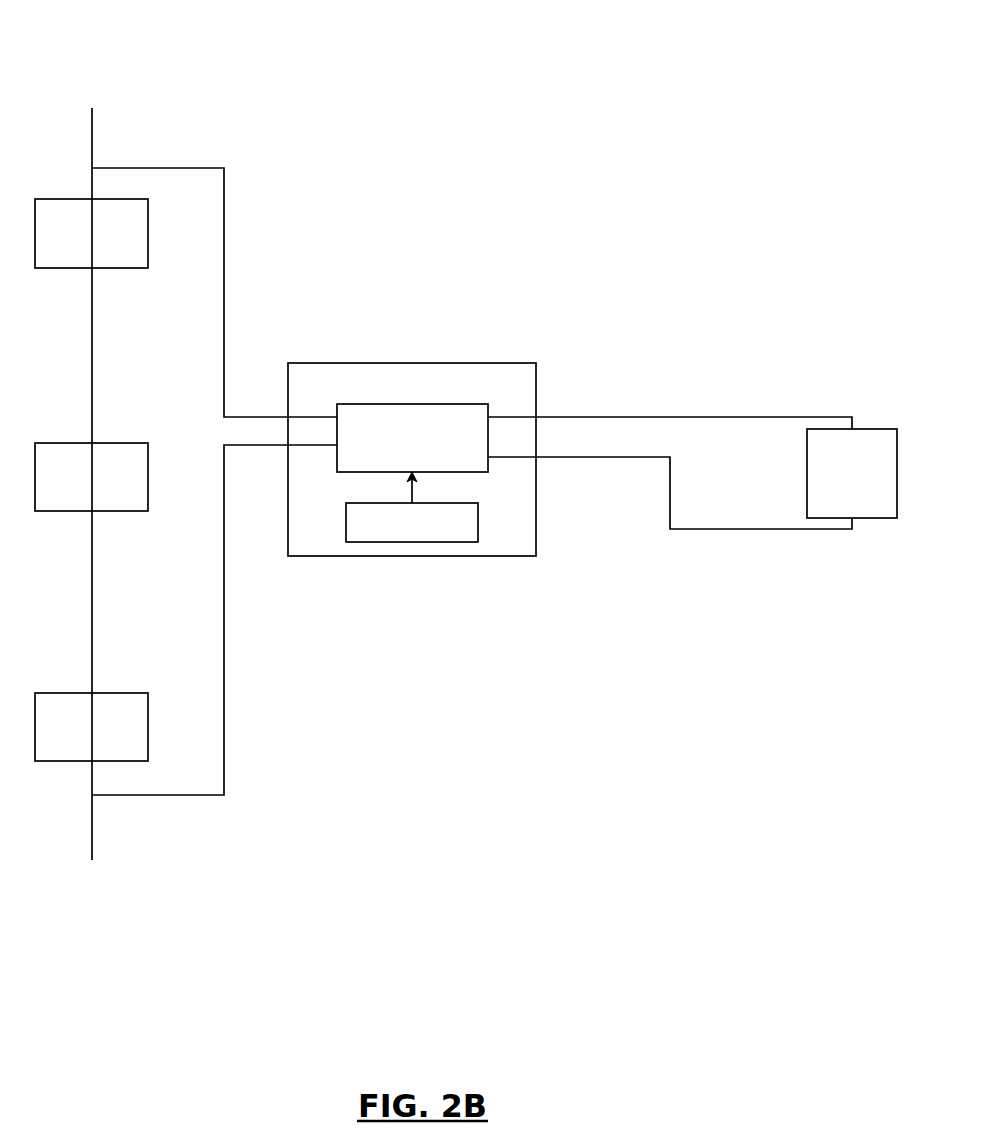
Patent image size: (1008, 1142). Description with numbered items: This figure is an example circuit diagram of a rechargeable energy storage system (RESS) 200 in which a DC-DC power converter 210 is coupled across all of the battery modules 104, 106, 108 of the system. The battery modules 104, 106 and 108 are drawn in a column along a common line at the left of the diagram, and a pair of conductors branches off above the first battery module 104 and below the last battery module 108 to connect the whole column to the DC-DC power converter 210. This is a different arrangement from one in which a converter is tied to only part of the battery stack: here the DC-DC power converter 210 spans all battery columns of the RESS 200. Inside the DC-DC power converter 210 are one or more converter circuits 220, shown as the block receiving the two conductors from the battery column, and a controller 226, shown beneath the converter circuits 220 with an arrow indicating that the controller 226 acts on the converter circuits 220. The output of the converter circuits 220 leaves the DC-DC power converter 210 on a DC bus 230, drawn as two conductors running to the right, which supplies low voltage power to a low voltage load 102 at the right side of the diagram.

The rechargeable energy storage system 200 is at (213, 33).
The low voltage load 102 is at (865, 429).
The battery module 104 is at (63, 199).
The battery module 106 is at (70, 443).
The battery module 108 is at (70, 693).
The DC-DC power converter 210 is at (343, 363).
The converter circuit 220 is at (337, 462).
The controller 226 is at (447, 542).
The DC bus 230 is at (683, 417).